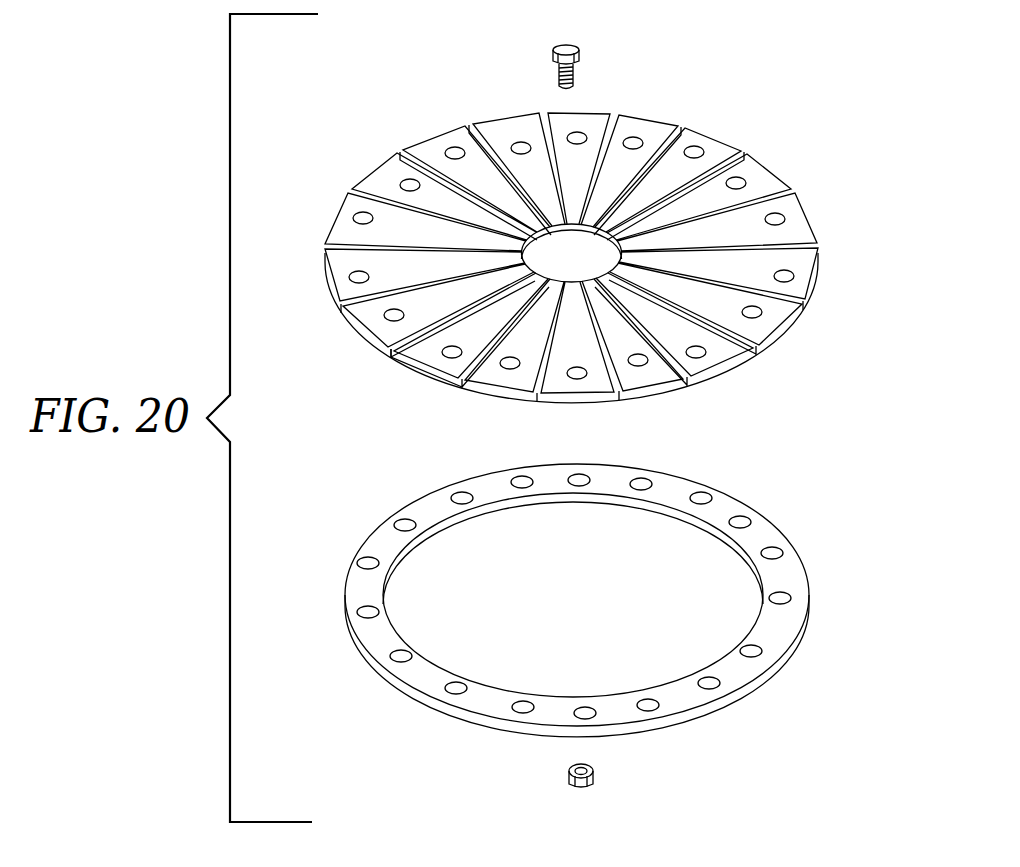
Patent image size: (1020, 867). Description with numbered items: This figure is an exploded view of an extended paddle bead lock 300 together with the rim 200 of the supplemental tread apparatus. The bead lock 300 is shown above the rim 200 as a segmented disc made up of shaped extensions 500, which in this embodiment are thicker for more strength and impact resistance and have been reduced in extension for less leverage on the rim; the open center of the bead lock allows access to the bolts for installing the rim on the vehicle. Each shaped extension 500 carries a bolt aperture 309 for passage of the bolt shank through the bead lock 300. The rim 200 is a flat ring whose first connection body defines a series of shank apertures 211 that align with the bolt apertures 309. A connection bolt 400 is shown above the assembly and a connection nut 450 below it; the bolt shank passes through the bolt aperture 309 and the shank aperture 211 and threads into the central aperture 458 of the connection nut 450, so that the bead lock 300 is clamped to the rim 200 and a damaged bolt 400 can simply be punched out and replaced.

The rim 200 is at (735, 497).
The shank aperture 211 is at (748, 522).
The bead lock 300 is at (656, 83).
The bolt aperture 309 is at (760, 313).
The connection bolt 400 is at (572, 47).
The connection nut 450 is at (588, 784).
The central aperture 458 is at (388, 343).
The shaped extensions 500 is at (796, 205).